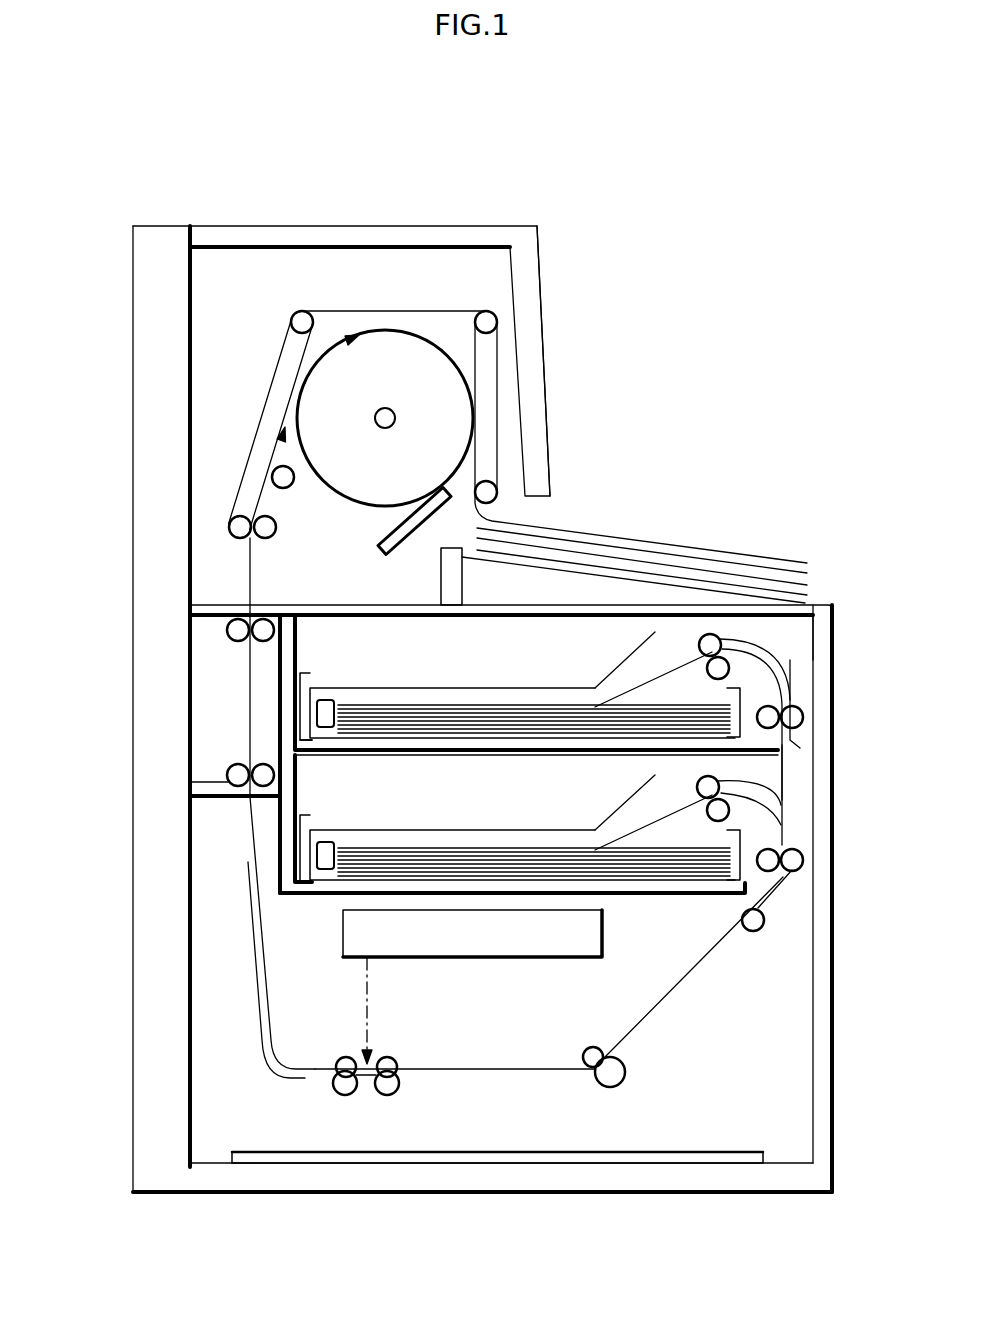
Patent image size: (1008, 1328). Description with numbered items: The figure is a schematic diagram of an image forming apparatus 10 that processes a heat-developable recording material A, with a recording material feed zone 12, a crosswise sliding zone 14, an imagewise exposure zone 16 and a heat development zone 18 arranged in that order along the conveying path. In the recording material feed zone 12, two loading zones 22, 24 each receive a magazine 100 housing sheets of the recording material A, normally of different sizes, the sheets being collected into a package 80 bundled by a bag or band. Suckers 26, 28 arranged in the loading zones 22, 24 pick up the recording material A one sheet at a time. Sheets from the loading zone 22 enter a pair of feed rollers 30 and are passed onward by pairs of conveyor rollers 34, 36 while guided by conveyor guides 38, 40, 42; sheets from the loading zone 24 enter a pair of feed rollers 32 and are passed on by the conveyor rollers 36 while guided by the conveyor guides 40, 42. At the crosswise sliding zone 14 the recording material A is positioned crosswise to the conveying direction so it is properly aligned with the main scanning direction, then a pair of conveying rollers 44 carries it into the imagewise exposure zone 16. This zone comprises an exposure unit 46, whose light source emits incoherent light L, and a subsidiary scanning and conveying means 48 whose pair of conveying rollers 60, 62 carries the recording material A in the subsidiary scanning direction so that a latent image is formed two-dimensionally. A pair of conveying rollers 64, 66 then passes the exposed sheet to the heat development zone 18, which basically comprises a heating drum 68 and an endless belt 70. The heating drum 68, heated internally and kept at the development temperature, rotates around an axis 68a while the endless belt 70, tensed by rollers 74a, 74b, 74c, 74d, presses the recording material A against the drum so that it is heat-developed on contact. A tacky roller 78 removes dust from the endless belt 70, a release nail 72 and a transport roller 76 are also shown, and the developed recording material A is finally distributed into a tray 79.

The image forming apparatus 10 is at (806, 289).
The recording material feed zone 12 is at (806, 640).
The crosswise sliding zone 14 is at (716, 1002).
The imagewise exposure zone 16 is at (460, 1125).
The heat development zone 18 is at (470, 262).
The loading zone 22 is at (338, 658).
The loading zone 24 is at (380, 800).
The sucker 26 is at (679, 669).
The sucker 28 is at (679, 814).
The pair of feed rollers 30 is at (722, 640).
The pair of feed rollers 32 is at (720, 783).
The pair of conveyor rollers 34 is at (803, 717).
The pair of conveyor rollers 36 is at (803, 860).
The conveyor guide 38 is at (792, 668).
The conveyor guide 40 is at (792, 755).
The conveyor guide 42 is at (764, 906).
The pair of conveying rollers 44 is at (626, 1072).
The exposure unit 46 is at (603, 930).
The subsidiary scanning and conveying means 48 is at (366, 1102).
The conveying roller 60 is at (399, 1083).
The conveying roller 62 is at (343, 1092).
The conveying roller 64 is at (228, 776).
The conveying roller 66 is at (228, 631).
The heating drum 68 is at (470, 398).
The axis 68a is at (385, 408).
The endless belt 70 is at (252, 446).
The release nail 72 is at (385, 552).
The roller 74a is at (228, 527).
The roller 74b is at (302, 311).
The roller 74c is at (497, 322).
The roller 74d is at (497, 492).
The transport roller 76 is at (273, 537).
The tacky roller 78 is at (292, 486).
The tray 79 is at (813, 605).
The package 80 is at (487, 705).
The magazine 100 is at (325, 742).
The recording material A is at (669, 543).
The incoherent light L is at (367, 1007).